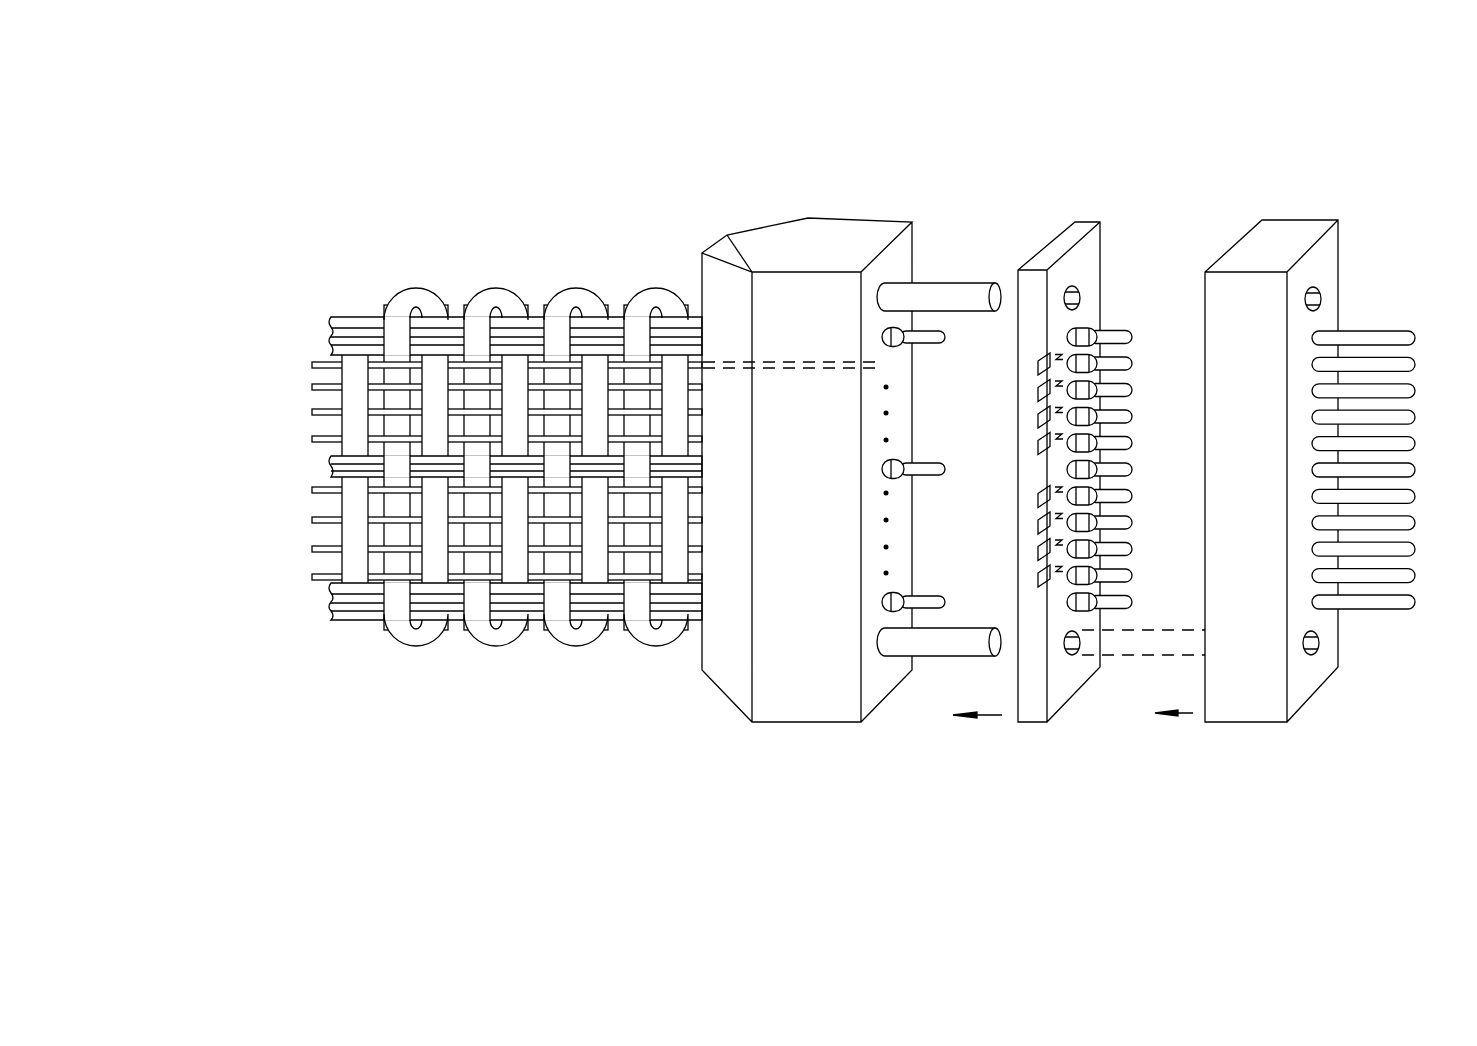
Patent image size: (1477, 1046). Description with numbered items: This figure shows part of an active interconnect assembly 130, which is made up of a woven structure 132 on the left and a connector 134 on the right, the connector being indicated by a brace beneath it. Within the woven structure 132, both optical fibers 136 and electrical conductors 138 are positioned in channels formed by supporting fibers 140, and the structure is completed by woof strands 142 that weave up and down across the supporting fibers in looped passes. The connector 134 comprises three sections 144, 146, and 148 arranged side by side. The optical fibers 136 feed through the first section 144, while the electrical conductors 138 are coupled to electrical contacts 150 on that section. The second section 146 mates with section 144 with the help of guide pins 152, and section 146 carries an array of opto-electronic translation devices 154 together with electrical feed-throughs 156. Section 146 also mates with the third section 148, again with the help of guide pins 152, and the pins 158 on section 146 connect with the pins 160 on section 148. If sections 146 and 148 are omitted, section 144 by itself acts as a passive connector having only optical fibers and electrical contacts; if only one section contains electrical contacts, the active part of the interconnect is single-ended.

The active interconnect assembly 130 is at (1243, 89).
The woven structure 132 is at (215, 543).
The connector 134 is at (1397, 744).
The optical fibers 136 is at (298, 412).
The electrical conductors 138 is at (427, 598).
The supporting fibers 140 is at (355, 322).
The woof strands 142 is at (488, 302).
The section 144 is at (758, 245).
The section 146 is at (1067, 232).
The section 148 is at (1278, 240).
The electrical contacts 150 is at (930, 480).
The guide pins 152 is at (955, 288).
The opto-electronic translation devices 154 is at (1038, 399).
The electrical feed-throughs 156 is at (1047, 337).
The pins 158 is at (1128, 495).
The pins 160 is at (1405, 495).